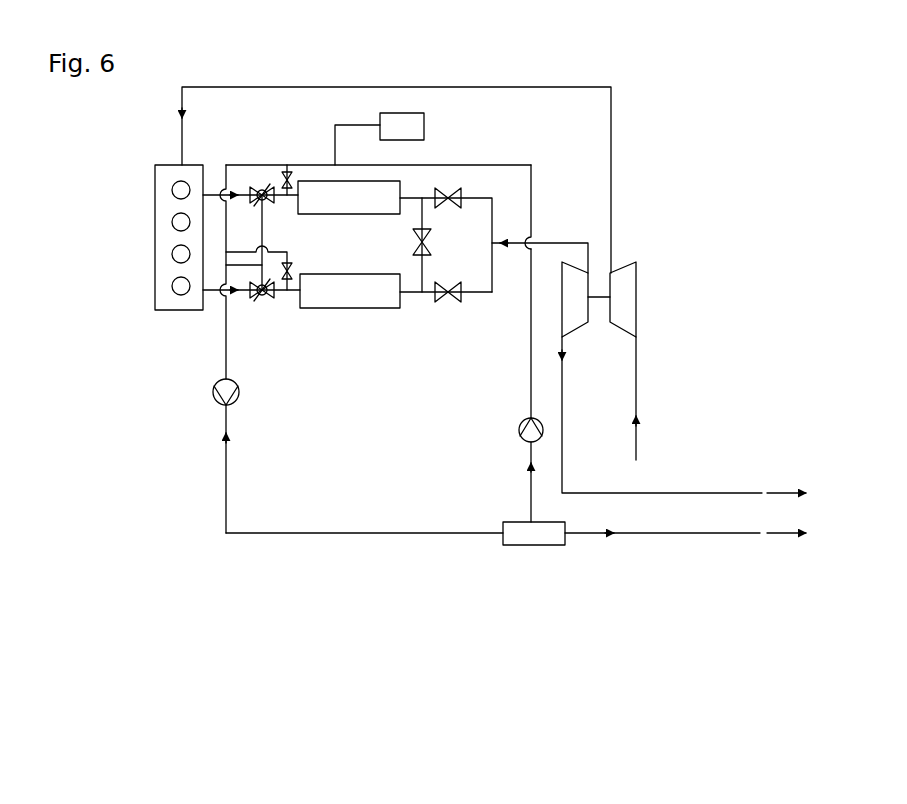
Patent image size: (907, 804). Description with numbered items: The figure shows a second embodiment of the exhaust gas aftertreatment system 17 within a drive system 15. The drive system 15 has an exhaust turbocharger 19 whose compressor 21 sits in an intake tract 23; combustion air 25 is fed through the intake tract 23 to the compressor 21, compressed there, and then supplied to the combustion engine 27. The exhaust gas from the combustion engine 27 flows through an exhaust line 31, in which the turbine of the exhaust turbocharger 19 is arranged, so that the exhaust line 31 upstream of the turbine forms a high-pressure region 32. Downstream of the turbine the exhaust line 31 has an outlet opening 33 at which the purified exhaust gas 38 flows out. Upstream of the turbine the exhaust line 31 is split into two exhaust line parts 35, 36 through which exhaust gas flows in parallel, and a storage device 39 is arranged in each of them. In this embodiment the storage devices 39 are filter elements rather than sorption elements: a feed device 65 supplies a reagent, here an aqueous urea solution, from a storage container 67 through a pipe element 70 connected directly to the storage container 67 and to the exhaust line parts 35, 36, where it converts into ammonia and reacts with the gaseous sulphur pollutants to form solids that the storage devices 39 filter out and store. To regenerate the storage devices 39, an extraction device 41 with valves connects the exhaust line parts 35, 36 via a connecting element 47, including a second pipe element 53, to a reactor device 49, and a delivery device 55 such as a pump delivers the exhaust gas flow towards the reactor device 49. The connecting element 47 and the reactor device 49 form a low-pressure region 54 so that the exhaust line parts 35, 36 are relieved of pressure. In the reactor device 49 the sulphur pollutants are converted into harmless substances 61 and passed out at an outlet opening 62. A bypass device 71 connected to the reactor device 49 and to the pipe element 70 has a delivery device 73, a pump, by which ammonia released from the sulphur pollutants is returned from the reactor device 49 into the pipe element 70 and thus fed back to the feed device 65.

The drive system 15 is at (803, 121).
The exhaust gas aftertreatment system 17 is at (391, 387).
The exhaust turbocharger 19 is at (604, 346).
The compressor 21 is at (625, 305).
The intake tract 23 is at (573, 86).
The combustion air 25 is at (640, 447).
The combustion engine 27 is at (165, 200).
The exhaust line 31 is at (476, 294).
The high-pressure region 32 is at (526, 141).
The outlet opening 33 is at (759, 487).
The exhaust line part 35 is at (418, 185).
The exhaust line part 36 is at (329, 315).
The purified exhaust gas 38 is at (790, 491).
The storage device 39 is at (357, 202).
The extraction device 41 is at (188, 400).
The connecting element 47 is at (188, 551).
The reactor device 49 is at (530, 536).
The second pipe element 53 is at (226, 493).
The low-pressure region 54 is at (579, 573).
The delivery device 55 is at (216, 381).
The harmless substances 61 is at (782, 535).
The outlet opening 62 is at (750, 539).
The feed device 65 is at (263, 142).
The storage container 67 is at (412, 127).
The pipe element 70 is at (300, 165).
The bypass device 71 is at (530, 394).
The delivery device 73 is at (520, 434).